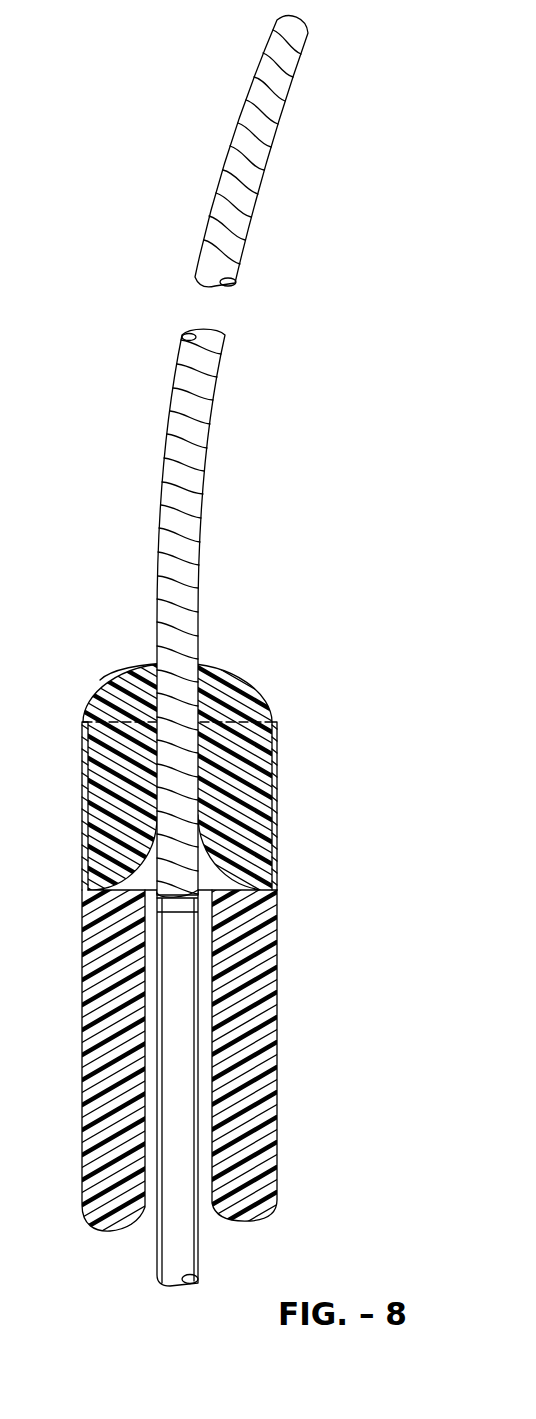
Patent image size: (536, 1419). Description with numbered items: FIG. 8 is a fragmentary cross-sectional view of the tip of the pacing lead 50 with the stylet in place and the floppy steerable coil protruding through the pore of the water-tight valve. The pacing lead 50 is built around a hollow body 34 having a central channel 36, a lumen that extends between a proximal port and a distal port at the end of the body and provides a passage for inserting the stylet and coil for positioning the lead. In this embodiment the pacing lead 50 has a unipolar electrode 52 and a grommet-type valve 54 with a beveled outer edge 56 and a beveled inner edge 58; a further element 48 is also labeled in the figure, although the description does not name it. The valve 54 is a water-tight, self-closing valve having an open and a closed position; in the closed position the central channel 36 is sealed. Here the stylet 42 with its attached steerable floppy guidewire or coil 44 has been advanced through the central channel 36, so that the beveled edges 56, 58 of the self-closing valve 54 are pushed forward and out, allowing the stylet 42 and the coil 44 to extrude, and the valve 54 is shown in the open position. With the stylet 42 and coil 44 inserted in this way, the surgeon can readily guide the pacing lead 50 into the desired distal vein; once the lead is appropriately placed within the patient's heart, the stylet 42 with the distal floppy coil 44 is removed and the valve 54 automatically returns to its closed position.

The hollow body 34 is at (272, 1038).
The central channel 36 is at (152, 1203).
The stylet 42 is at (192, 1243).
The steerable distal floppy coil 44 is at (202, 462).
The sleeve 48 is at (275, 797).
The pacing lead 50 is at (298, 946).
The unipolar electrode 52 is at (85, 877).
The grommet-type valve 54 is at (237, 688).
The beveled outer edge 56 is at (126, 658).
The beveled inner edge 58 is at (128, 870).